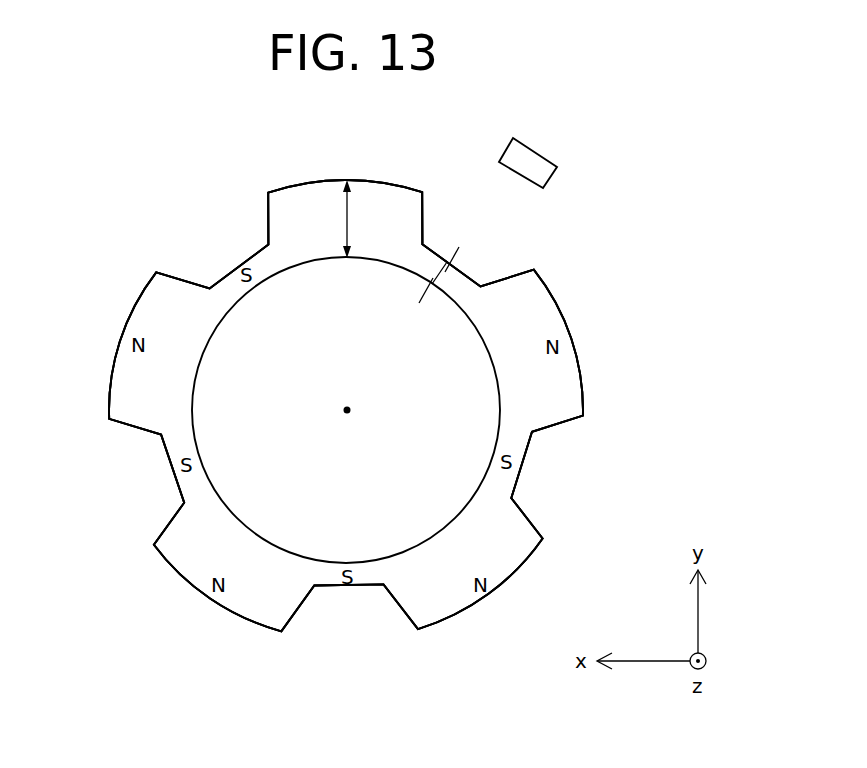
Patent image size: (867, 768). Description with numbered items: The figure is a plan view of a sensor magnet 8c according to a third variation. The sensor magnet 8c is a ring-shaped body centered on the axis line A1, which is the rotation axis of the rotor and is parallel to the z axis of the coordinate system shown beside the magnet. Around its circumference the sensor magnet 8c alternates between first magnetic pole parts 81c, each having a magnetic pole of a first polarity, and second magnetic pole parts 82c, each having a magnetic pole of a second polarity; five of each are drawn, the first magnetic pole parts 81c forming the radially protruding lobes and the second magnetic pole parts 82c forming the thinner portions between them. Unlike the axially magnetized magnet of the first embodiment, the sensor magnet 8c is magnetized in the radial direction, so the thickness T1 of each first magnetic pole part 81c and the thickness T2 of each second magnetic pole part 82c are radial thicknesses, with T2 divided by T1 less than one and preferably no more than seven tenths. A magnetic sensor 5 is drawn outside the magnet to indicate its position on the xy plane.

The sensor magnet 8c is at (137, 168).
The first magnetic pole part 81c is at (302, 198).
The second magnetic pole part 82c is at (425, 263).
The magnetic sensor 5 is at (533, 151).
The thickness of first magnetic pole part T1 is at (350, 213).
The thickness of second magnetic pole part T2 is at (437, 281).
The axis line A1 is at (350, 407).